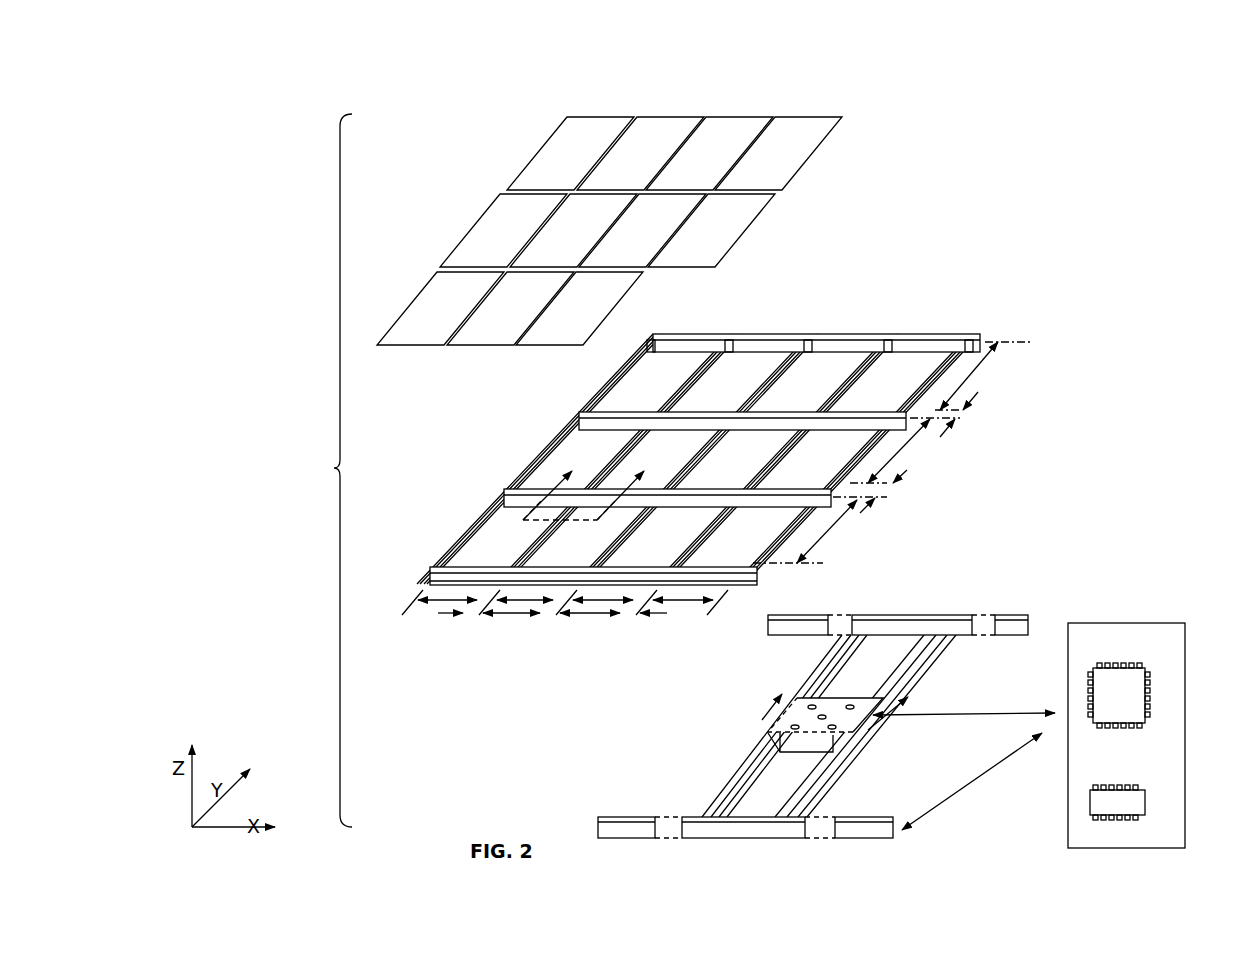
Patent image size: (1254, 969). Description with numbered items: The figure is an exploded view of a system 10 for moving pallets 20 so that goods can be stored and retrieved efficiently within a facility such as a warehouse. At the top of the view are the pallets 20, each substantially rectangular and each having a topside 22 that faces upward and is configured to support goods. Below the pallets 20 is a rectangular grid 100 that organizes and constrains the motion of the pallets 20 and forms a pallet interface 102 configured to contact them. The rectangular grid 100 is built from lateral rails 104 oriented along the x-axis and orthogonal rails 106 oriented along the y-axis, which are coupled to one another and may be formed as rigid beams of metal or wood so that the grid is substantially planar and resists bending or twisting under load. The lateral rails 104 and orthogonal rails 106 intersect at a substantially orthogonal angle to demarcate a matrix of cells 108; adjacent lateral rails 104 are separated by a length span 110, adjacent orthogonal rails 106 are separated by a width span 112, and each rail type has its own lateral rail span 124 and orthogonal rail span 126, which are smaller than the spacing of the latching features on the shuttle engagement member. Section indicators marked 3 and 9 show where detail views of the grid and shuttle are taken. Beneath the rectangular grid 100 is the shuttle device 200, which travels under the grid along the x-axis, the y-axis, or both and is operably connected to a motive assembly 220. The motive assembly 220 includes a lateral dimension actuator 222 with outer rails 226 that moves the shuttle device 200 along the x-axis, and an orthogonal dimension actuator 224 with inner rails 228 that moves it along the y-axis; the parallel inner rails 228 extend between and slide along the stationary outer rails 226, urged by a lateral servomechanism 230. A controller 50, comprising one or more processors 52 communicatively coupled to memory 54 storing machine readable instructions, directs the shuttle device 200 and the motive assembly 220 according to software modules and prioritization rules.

The system 10 is at (326, 468).
The pallets 20 is at (589, 126).
The topside 22 is at (592, 150).
The rectangular grid 100 is at (729, 482).
The pallet interface 102 is at (723, 490).
The lateral rails 104 is at (847, 340).
The orthogonal rails 106 is at (657, 343).
The matrix of cells 108 is at (589, 445).
The length span 110 is at (985, 356).
The width span 112 is at (430, 606).
The lateral rail span 124 is at (972, 396).
The orthogonal rail span 126 is at (500, 616).
The shuttle device 200 is at (783, 718).
The motive assembly 220 is at (656, 712).
The lateral dimension actuator 222 is at (872, 626).
The orthogonal dimension actuator 224 is at (746, 753).
The outer rails 226 is at (816, 615).
The inner rails 228 is at (721, 793).
The lateral servomechanism 230 is at (913, 625).
The controller 50 is at (1126, 712).
The processors 52 is at (1137, 685).
The memory 54 is at (1138, 795).
The section line 3 is at (591, 486).
The section line 9 is at (843, 702).